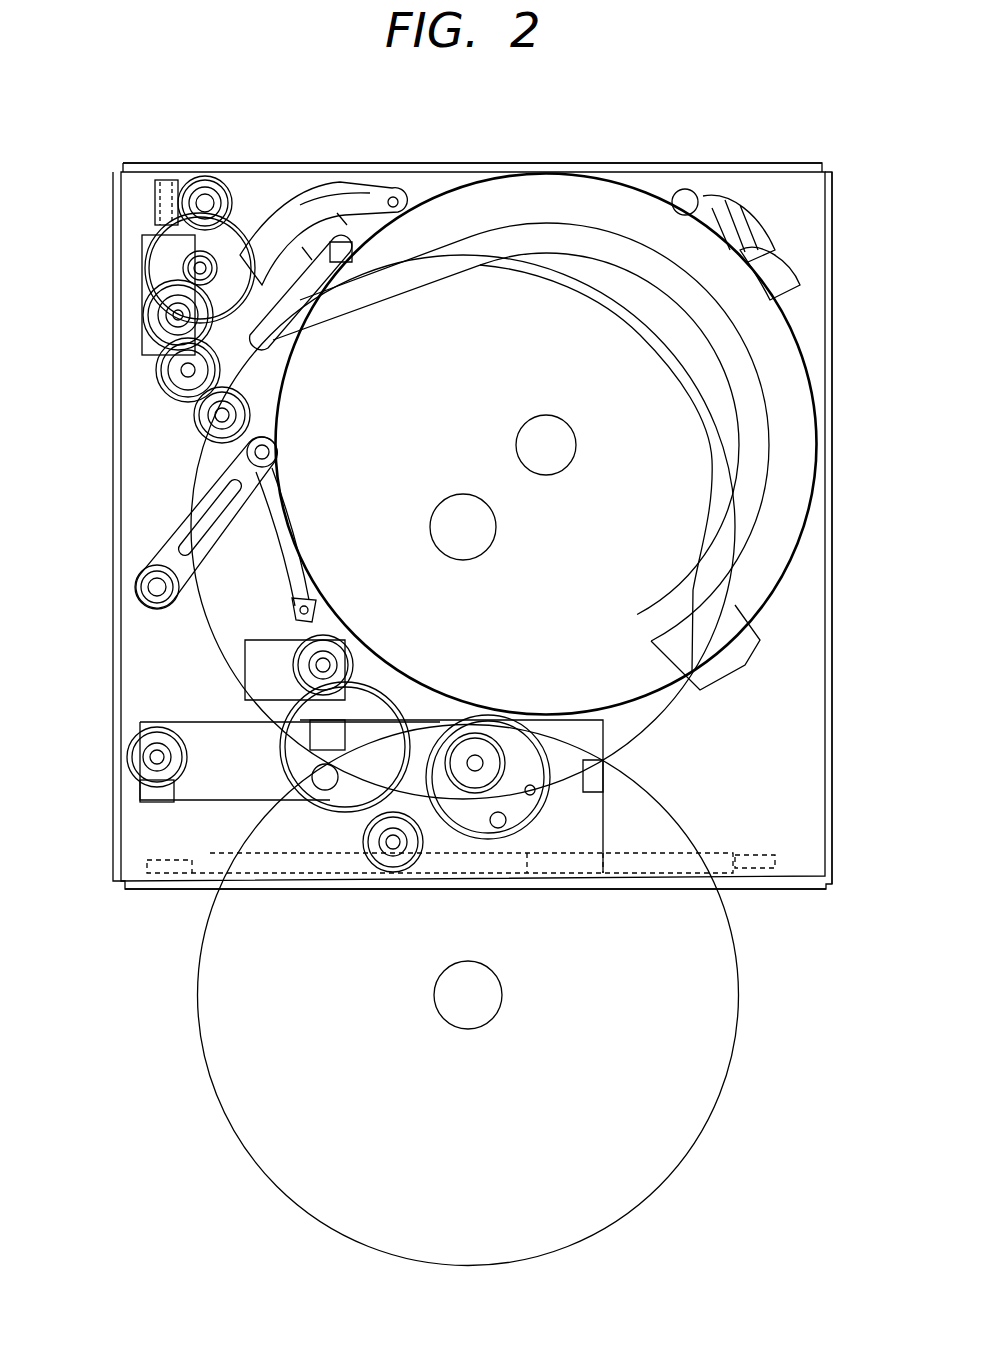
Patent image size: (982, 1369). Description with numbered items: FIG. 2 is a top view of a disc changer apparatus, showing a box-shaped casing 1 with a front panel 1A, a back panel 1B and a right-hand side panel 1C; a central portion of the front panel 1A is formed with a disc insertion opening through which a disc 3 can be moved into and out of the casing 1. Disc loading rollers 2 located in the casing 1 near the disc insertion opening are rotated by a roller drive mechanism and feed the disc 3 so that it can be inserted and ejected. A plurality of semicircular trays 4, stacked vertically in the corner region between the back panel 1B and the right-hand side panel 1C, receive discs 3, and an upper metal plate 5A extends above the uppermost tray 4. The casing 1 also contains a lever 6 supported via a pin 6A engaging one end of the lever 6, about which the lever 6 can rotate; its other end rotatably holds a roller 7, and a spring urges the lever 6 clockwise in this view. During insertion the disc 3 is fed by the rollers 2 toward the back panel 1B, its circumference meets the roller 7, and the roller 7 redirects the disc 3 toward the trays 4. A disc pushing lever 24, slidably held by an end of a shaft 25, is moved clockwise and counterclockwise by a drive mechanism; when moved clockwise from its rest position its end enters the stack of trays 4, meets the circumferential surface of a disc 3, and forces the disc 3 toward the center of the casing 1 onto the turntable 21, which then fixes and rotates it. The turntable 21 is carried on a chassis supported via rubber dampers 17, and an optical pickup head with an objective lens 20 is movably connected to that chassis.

The casing 1 is at (832, 710).
The front panel 1A is at (826, 889).
The back panel 1B is at (576, 163).
The right-hand side panel 1C is at (832, 514).
The disc loading rollers 2 is at (758, 855).
The disc 3 is at (722, 1022).
The tray 4 is at (647, 270).
The upper metal plate 5A is at (518, 263).
The lever 6 is at (170, 548).
The pin 6A is at (145, 590).
The roller 7 is at (277, 456).
The dampers 17 is at (240, 658).
The objective lens 20 is at (300, 800).
The turntable 21 is at (538, 767).
The disc pushing lever 24 is at (332, 185).
The shaft 25 is at (158, 276).